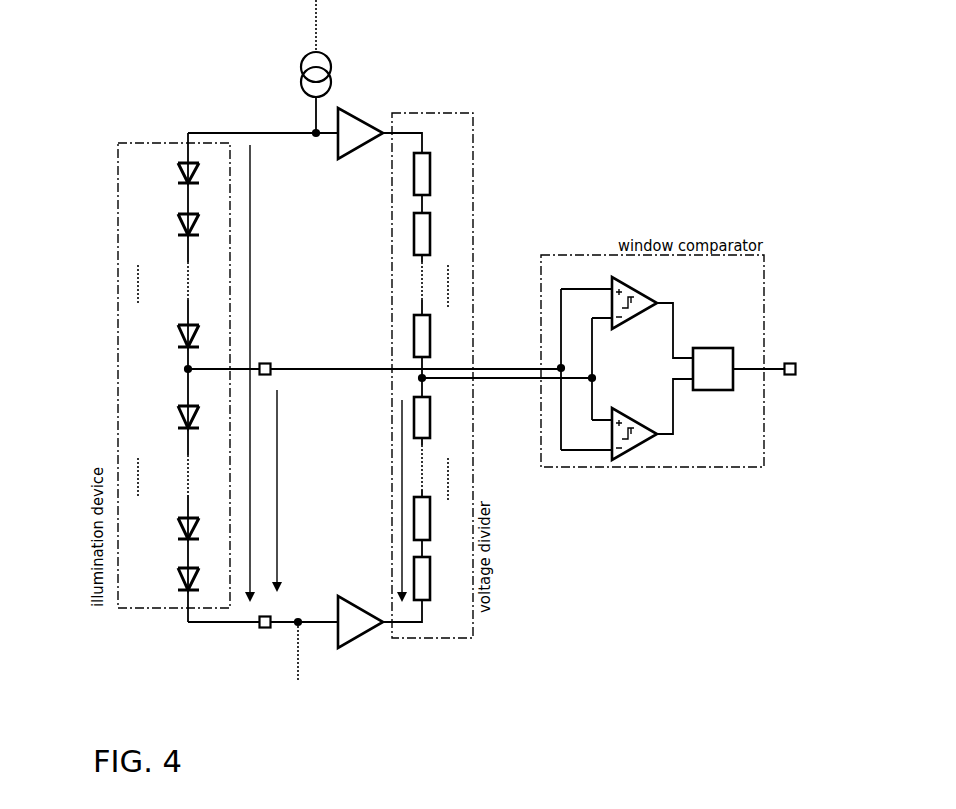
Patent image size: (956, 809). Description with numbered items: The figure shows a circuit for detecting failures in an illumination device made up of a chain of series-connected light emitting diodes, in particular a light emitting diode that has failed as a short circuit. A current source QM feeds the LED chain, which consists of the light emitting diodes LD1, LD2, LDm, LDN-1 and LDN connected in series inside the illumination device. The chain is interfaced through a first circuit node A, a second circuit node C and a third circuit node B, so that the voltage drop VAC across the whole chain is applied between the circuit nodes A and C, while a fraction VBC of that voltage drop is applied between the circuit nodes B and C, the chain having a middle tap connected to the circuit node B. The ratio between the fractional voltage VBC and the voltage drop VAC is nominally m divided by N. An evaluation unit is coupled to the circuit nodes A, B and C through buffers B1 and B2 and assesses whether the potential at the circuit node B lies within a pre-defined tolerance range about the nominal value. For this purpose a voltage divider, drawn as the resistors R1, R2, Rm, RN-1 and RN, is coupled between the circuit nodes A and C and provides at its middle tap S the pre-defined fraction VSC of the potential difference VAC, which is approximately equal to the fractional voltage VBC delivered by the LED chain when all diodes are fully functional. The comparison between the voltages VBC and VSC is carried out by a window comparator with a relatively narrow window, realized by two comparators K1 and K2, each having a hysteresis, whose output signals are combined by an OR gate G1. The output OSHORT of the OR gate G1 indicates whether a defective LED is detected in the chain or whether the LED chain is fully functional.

The current source QM is at (323, 52).
The first circuit node A is at (273, 121).
The third circuit node B is at (270, 359).
The second circuit node C is at (261, 633).
The middle tap S is at (407, 387).
The buffer amplifier B1 is at (345, 108).
The buffer amplifier B2 is at (345, 596).
The light emitting diode LDN is at (164, 175).
The light emitting diode N-1 LDN-1 is at (164, 226).
The light emitting diode m LDm is at (164, 419).
The light emitting diode LD2 is at (164, 530).
The light emitting diode LD1 is at (164, 581).
The resistor N RN is at (435, 174).
The resistor N-1 RN-1 is at (440, 234).
The resistor m Rm is at (436, 417).
The resistor 2 R2 is at (434, 518).
The resistor 1 R1 is at (434, 578).
The comparator K1 is at (636, 263).
The comparator K2 is at (636, 394).
The OR-gate G1 is at (713, 348).
The short-circuit output OSHORT is at (809, 385).
The voltage drop across the LED chain VAC is at (267, 372).
The fractional voltage VBC is at (295, 490).
The fractional voltage VSC is at (386, 500).